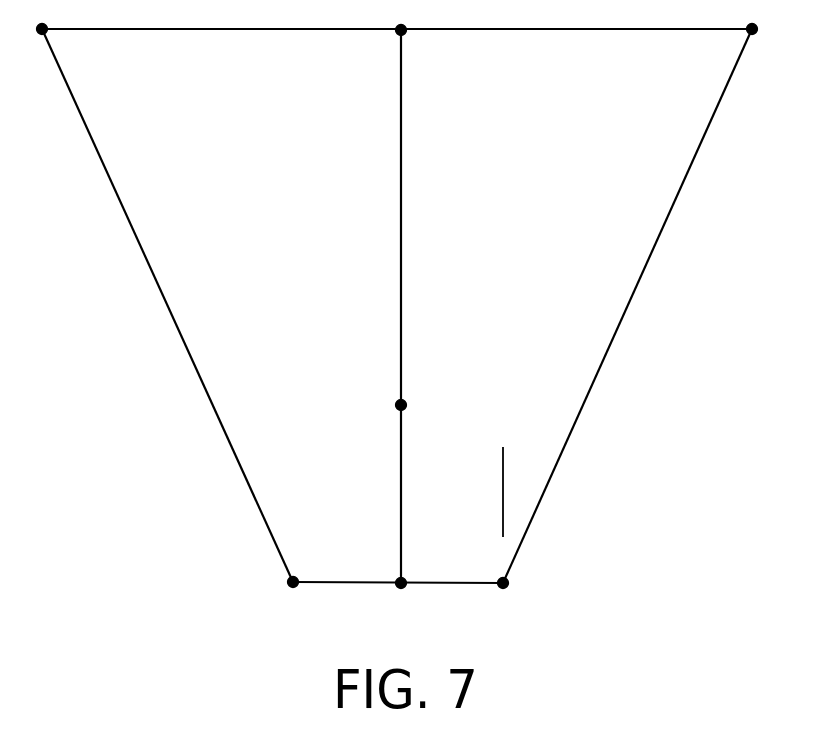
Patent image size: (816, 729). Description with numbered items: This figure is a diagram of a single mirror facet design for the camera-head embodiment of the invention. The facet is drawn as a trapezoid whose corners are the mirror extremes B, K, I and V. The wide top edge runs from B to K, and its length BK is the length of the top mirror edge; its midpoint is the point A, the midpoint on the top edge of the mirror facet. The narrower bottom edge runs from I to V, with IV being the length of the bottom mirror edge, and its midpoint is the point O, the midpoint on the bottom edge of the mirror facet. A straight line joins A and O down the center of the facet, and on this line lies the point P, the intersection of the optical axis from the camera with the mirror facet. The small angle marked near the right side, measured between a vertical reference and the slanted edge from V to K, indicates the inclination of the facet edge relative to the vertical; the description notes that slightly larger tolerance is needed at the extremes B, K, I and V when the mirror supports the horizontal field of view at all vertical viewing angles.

The mirror extreme B is at (33, 38).
The midpoint on top edge of mirror facet A is at (408, 18).
The mirror extreme K is at (763, 41).
The mirror extreme I is at (286, 585).
The midpoint on bottom edge of mirror facet O is at (408, 572).
The mirror extreme V is at (514, 582).
The intersection of optical axis and mirror facet P is at (407, 396).